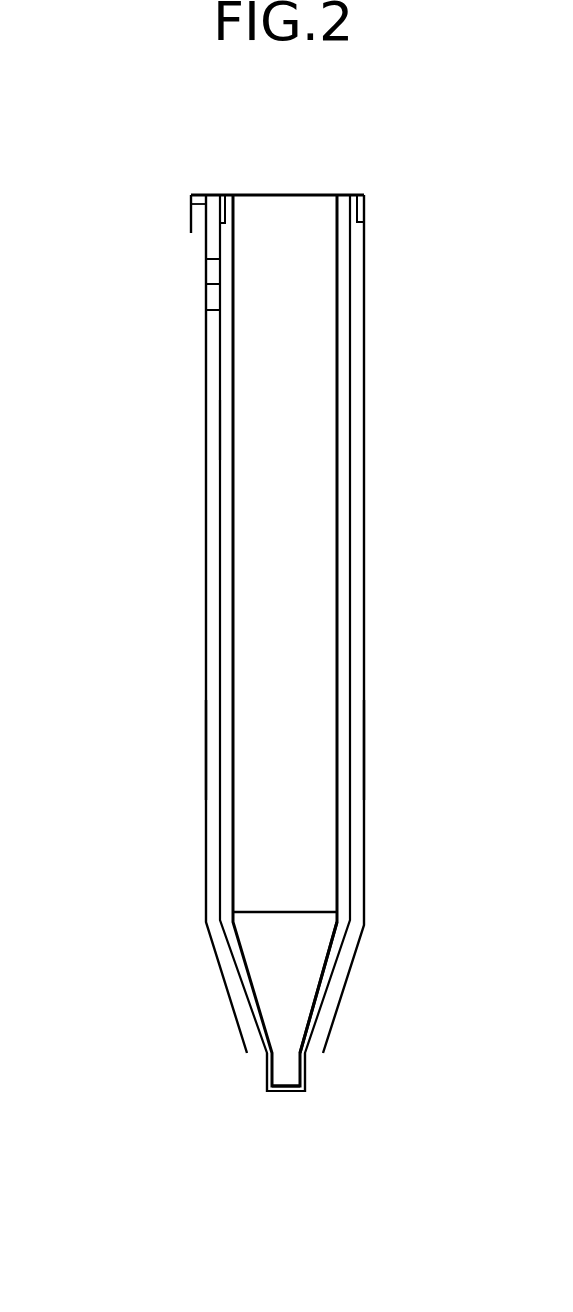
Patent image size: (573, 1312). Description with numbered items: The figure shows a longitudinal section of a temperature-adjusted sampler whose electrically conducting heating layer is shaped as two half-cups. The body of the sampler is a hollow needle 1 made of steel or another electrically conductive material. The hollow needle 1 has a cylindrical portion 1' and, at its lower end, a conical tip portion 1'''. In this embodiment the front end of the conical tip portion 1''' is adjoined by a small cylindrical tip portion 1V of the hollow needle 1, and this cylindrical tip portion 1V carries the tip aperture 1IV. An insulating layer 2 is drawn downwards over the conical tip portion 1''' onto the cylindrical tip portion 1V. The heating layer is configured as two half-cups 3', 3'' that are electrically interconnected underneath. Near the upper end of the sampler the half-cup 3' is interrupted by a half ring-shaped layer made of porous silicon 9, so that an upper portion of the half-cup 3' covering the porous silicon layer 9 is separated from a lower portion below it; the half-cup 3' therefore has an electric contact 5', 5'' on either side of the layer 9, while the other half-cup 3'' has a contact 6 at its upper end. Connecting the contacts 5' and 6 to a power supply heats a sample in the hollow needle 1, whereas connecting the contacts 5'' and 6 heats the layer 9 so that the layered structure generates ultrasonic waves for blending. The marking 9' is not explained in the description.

The hollow needle 1 is at (247, 643).
The cylindrical portion 1' is at (285, 640).
The conical tip portion 1''' is at (376, 987).
The tip aperture 1IV is at (295, 1098).
The cylindrical tip portion 1V is at (308, 1078).
The insulating layer 2 is at (220, 428).
The half-cup 3' is at (162, 750).
The half-cup 3'' is at (421, 750).
The electric contact 5' is at (160, 321).
The electric contact 5'' is at (149, 188).
The contact 6 is at (363, 210).
The layer made of porous silicon 9 is at (159, 266).
The notch 9' is at (138, 233).